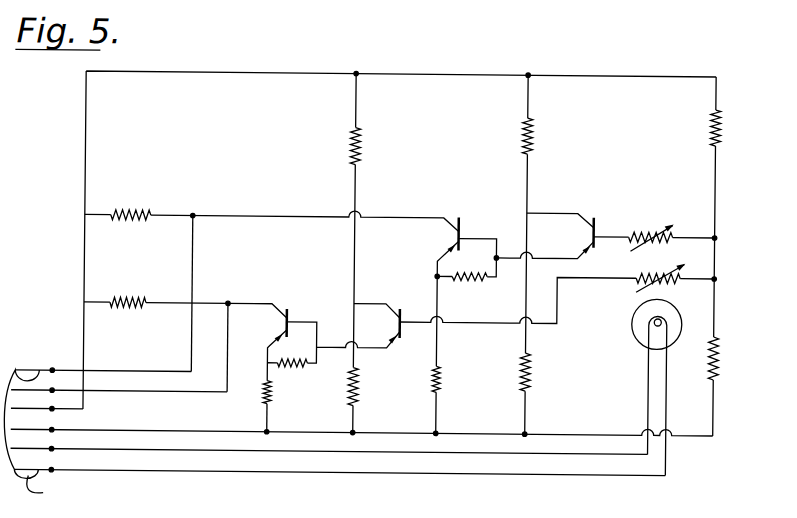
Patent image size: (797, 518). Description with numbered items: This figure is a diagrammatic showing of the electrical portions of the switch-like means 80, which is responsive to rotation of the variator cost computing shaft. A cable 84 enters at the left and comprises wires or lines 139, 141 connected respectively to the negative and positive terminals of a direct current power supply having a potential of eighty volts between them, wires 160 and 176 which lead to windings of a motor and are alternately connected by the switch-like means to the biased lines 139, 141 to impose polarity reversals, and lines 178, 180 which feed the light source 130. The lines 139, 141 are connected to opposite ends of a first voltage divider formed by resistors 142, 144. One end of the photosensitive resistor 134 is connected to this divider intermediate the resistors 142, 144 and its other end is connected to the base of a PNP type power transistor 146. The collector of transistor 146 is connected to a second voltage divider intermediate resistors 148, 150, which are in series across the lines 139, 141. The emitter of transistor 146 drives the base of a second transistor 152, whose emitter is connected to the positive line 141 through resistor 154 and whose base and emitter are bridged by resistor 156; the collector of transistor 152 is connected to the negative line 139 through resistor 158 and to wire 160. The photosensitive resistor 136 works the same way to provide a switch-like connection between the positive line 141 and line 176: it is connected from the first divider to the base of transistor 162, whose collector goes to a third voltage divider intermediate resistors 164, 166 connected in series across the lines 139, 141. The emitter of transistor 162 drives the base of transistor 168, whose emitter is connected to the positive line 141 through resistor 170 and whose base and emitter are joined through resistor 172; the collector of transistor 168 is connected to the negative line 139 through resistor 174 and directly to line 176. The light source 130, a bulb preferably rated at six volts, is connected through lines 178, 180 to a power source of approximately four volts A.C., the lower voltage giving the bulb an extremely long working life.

The switch-like means 80 is at (316, 64).
The resistor 158 is at (115, 213).
The resistor 174 is at (146, 324).
The wire 160 is at (72, 392).
The wire 176 is at (74, 374).
The negative line 139 is at (68, 411).
The positive line 141 is at (68, 431).
The line 178 is at (66, 451).
The line 180 is at (68, 471).
The cable 84 is at (50, 489).
The transistor 168 is at (322, 288).
The resistor 172 is at (290, 382).
The resistor 170 is at (272, 407).
The transistor 162 is at (413, 282).
The resistor 166 is at (361, 386).
The resistor 164 is at (361, 128).
The transistor 152 is at (485, 186).
The resistor 156 is at (484, 281).
The resistor 154 is at (440, 368).
The resistor 148 is at (535, 136).
The resistor 150 is at (530, 388).
The PNP power transistor 146 is at (630, 188).
The photosensitive resistor 134 is at (697, 208).
The photosensitive resistor 136 is at (670, 283).
The light source 130 is at (641, 341).
The resistor 144 is at (745, 323).
The resistor 142 is at (757, 100).